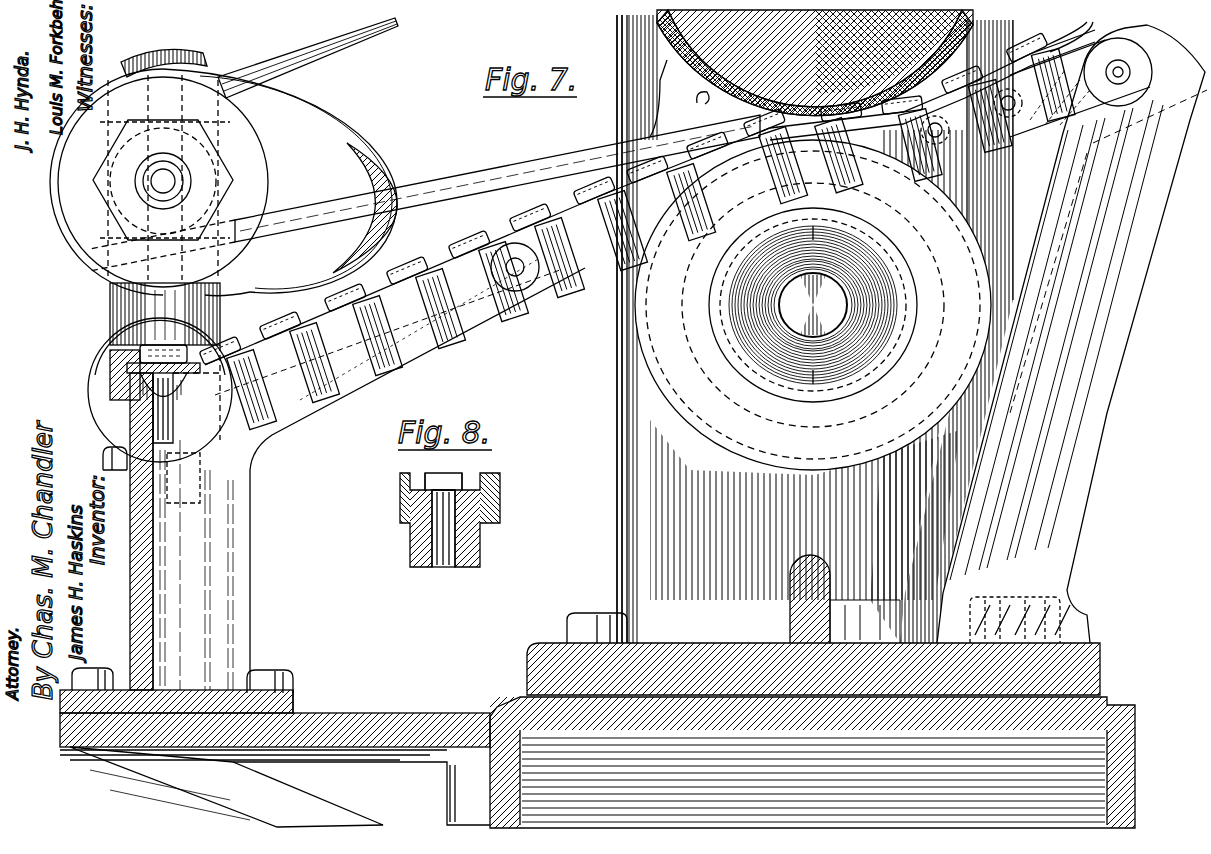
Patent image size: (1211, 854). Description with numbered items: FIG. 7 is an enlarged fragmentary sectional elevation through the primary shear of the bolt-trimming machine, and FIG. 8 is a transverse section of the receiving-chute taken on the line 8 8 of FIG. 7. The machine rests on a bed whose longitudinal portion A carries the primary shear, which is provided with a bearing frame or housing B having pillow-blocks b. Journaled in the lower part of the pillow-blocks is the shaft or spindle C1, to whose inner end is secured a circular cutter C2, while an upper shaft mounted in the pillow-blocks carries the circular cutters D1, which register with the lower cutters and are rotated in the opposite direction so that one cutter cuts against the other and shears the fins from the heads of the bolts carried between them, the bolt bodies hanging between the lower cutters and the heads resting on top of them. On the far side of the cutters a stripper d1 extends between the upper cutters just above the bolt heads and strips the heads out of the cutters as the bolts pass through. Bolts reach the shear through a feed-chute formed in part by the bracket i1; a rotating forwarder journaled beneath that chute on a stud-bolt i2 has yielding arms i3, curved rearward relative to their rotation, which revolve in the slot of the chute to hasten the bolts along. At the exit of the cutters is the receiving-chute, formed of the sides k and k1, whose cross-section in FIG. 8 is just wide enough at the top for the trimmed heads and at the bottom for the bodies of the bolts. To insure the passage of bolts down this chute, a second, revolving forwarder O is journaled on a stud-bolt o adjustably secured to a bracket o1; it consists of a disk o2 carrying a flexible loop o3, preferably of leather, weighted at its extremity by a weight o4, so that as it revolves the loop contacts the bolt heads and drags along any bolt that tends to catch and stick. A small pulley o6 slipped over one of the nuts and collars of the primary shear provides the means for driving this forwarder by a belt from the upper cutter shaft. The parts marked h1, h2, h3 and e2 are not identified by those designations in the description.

In FIG. 7, the second forwarder O is at (52, 186).
In FIG. 7, the stud-bolt o is at (150, 181).
In FIG. 7, the bracket o1 is at (110, 316).
In FIG. 7, the disk o2 is at (256, 181).
In FIG. 7, the loop o3 is at (338, 126).
In FIG. 7, the weight o4 is at (374, 165).
In FIG. 7, the small pulley o6 is at (470, 180).
In FIG. 7, the section line 8 is at (396, 338).
In FIG. 7, the side of receiving-chute k is at (350, 395).
In FIG. 8, the side of receiving-chute k is at (408, 551).
In FIG. 8, the side of receiving-chute k1 is at (478, 551).
In FIG. 7, the pin link h1 is at (590, 272).
In FIG. 7, the column h2 is at (250, 612).
In FIG. 7, the base plate h3 is at (382, 716).
In FIG. 7, the pillow-blocks b is at (616, 118).
In FIG. 7, the stripper d1 is at (690, 105).
In FIG. 7, the circular cutters D1 is at (656, 26).
In FIG. 7, the bracket i1 is at (1160, 167).
In FIG. 7, the stud-bolt i2 is at (1046, 128).
In FIG. 7, the yielding arms i3 is at (1048, 48).
In FIG. 7, the hub ring e2 is at (716, 304).
In FIG. 7, the shaft or spindle C1 is at (835, 304).
In FIG. 7, the circular cutters C2 is at (706, 430).
In FIG. 7, the bearing frame or housing B is at (815, 329).
In FIG. 7, the longitudinal portion of bed A is at (684, 735).